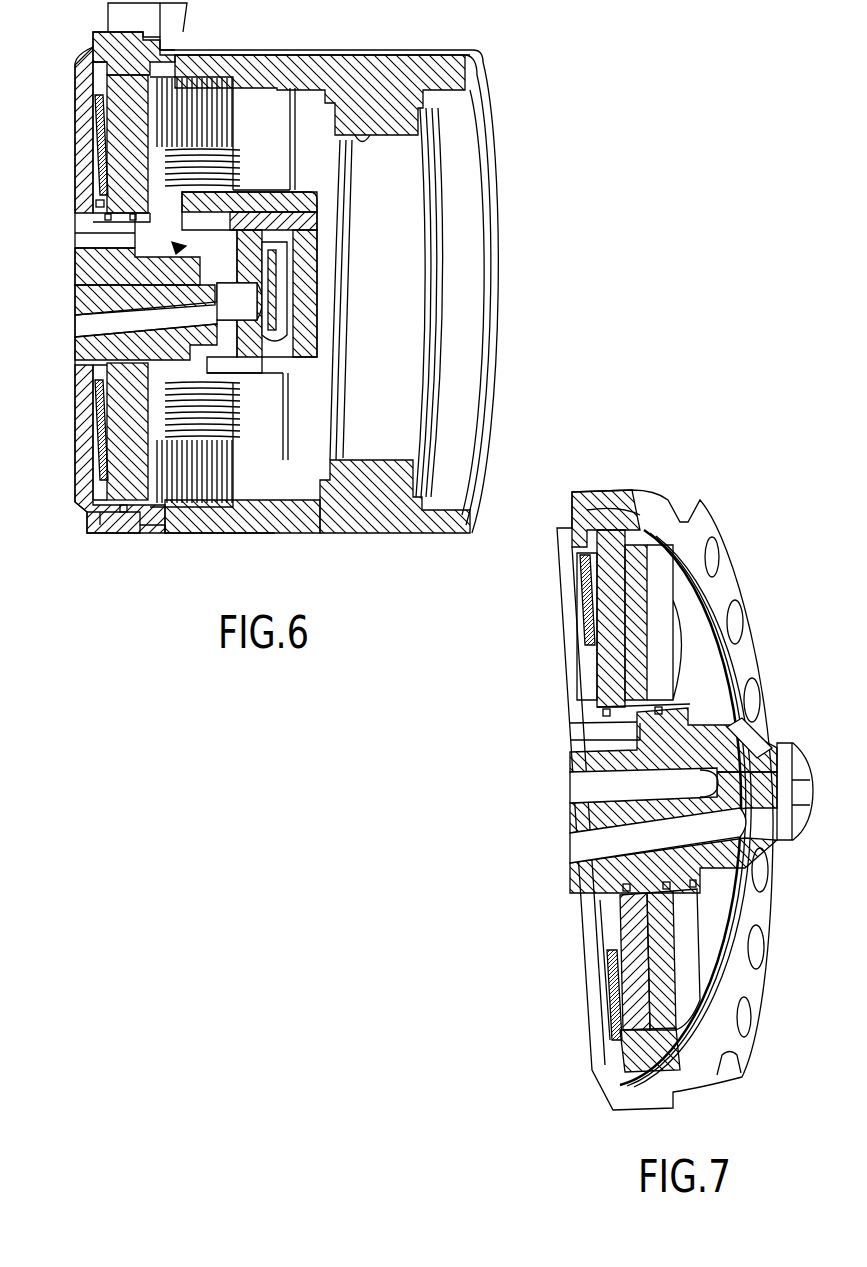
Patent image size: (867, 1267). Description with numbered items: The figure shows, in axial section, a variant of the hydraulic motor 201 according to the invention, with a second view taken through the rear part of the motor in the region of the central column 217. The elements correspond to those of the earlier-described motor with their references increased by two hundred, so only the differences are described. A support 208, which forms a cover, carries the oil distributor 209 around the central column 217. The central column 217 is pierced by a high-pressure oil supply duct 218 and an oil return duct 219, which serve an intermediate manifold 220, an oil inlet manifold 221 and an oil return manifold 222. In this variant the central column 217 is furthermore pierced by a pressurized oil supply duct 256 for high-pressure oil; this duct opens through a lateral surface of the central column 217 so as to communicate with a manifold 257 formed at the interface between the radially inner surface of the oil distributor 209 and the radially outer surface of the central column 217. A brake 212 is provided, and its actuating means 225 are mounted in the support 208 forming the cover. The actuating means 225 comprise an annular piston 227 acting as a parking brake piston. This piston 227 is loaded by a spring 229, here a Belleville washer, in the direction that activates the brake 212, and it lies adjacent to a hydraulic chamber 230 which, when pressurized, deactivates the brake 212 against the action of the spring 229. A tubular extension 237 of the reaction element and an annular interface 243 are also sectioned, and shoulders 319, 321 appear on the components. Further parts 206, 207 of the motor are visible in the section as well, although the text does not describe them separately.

In FIG. 6, the clutch assembly 201 is at (541, 108).
In FIG. 6, the outer sleeve 206 is at (460, 62).
In FIG. 6, the housing ring 207 is at (357, 147).
In FIG. 6, the support 208 is at (76, 512).
In FIG. 6, the oil distributor 209 is at (78, 257).
In FIG. 6, the brake 212 is at (248, 118).
In FIG. 6, the central column 217 is at (103, 527).
In FIG. 7, the central column 217 is at (626, 800).
In FIG. 6, the high-pressure oil supply duct 218 is at (77, 287).
In FIG. 7, the high-pressure oil supply duct 218 is at (595, 788).
In FIG. 6, the oil return duct 219 is at (75, 338).
In FIG. 7, the oil return duct 219 is at (602, 848).
In FIG. 6, the intermediate manifold 220 is at (90, 320).
In FIG. 6, the oil inlet manifold 221 is at (130, 160).
In FIG. 6, the oil return manifold 222 is at (105, 382).
In FIG. 7, the actuating means 225 is at (654, 612).
In FIG. 6, the annular piston 227 is at (93, 45).
In FIG. 7, the annular piston 227 is at (613, 503).
In FIG. 6, the spring 229 is at (77, 87).
In FIG. 7, the spring 229 is at (587, 607).
In FIG. 6, the hydraulic chamber 230 is at (112, 135).
In FIG. 7, the hydraulic chamber 230 is at (608, 643).
In FIG. 6, the tubular extension of the reaction element 237 is at (410, 60).
In FIG. 6, the annular interface 243 is at (392, 450).
In FIG. 6, the pressurized oil supply duct 256 is at (90, 237).
In FIG. 7, the pressurized oil supply duct 256 is at (577, 745).
In FIG. 6, the manifold 257 is at (115, 218).
In FIG. 7, the manifold 257 is at (632, 723).
In FIG. 6, the shoulder 319 is at (423, 125).
In FIG. 6, the shoulder 321 is at (307, 503).